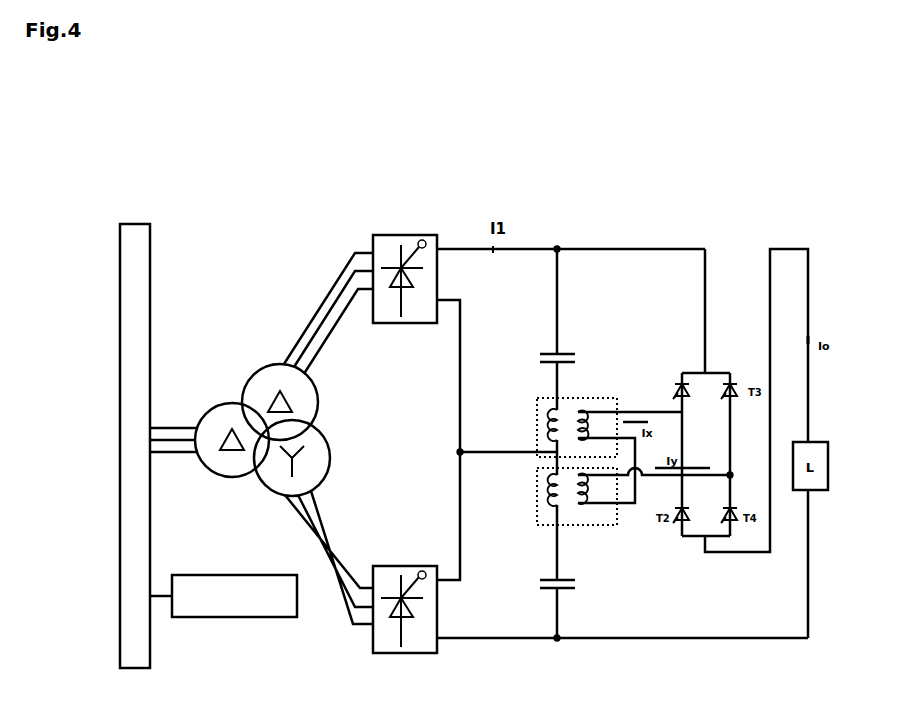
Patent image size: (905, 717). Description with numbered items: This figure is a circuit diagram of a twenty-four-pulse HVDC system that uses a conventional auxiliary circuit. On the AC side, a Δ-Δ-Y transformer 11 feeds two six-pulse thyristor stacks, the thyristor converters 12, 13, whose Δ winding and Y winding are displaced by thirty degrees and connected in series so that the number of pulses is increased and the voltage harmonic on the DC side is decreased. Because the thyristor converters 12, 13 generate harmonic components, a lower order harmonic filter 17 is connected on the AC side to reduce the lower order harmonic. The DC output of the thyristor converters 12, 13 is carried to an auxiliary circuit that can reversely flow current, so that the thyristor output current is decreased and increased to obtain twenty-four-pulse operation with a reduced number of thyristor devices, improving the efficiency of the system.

The Δ-Δ-Y transformer 11 is at (325, 430).
The thyristor converter 12 is at (428, 233).
The thyristor converter 13 is at (410, 565).
The lower order harmonic filter 17 is at (245, 617).